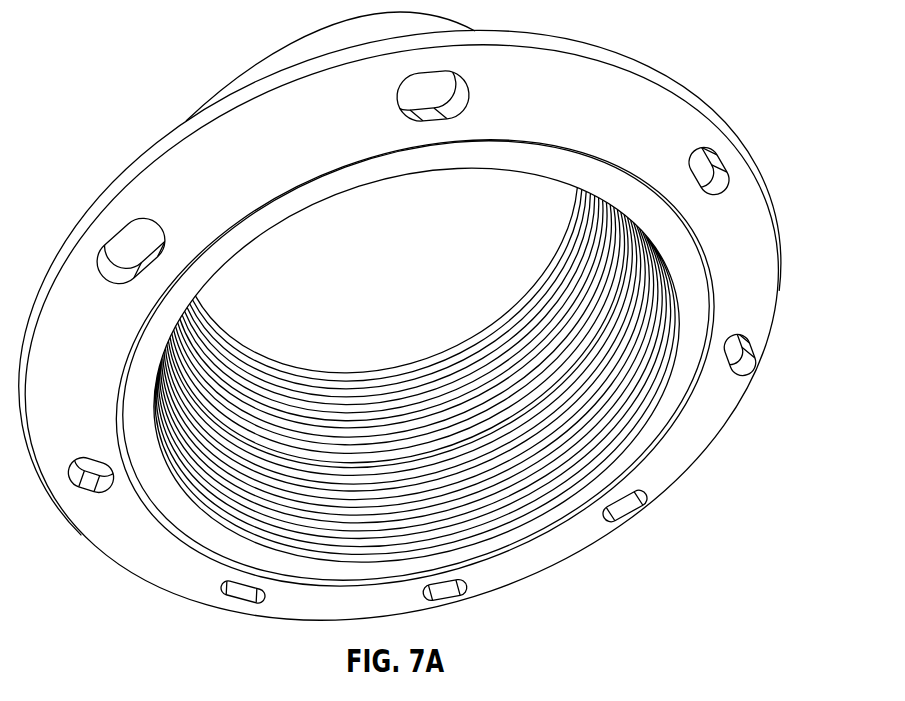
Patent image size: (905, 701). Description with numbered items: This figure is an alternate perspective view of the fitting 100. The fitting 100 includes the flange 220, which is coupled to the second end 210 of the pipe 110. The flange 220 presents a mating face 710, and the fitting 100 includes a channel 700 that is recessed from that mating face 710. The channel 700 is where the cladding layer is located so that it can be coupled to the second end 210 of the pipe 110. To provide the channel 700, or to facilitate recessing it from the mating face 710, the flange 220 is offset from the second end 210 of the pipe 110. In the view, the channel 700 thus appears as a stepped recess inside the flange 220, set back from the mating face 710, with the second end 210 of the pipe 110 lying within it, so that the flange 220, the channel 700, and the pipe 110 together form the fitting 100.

The fitting 100 is at (98, 45).
The pipe 110 is at (470, 11).
The flange 220 is at (697, 118).
The mating face 710 is at (762, 250).
The channel 700 is at (165, 506).
The second end 210 is at (222, 540).